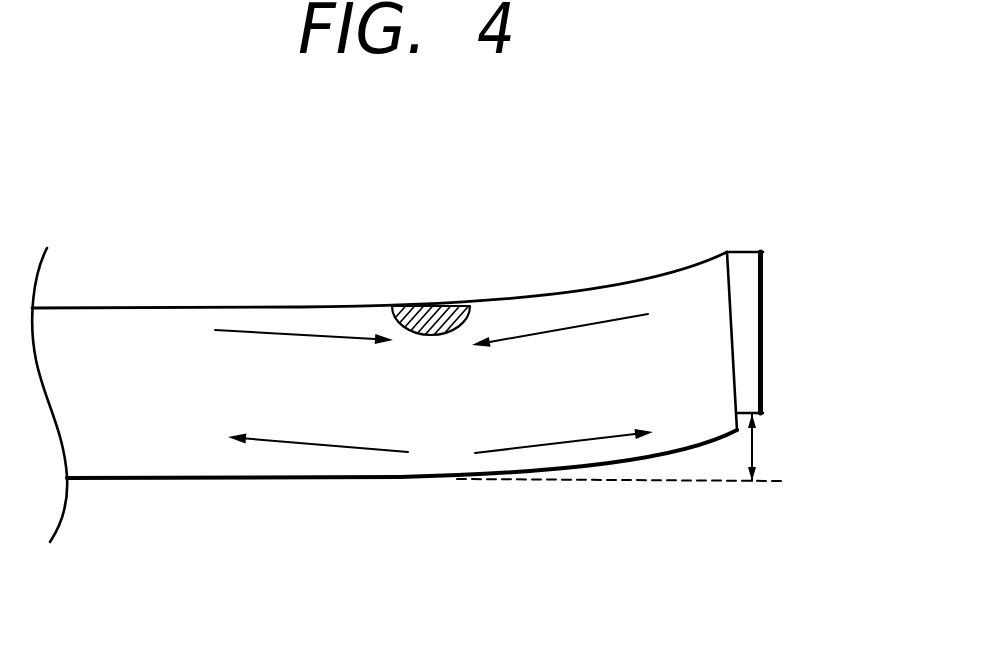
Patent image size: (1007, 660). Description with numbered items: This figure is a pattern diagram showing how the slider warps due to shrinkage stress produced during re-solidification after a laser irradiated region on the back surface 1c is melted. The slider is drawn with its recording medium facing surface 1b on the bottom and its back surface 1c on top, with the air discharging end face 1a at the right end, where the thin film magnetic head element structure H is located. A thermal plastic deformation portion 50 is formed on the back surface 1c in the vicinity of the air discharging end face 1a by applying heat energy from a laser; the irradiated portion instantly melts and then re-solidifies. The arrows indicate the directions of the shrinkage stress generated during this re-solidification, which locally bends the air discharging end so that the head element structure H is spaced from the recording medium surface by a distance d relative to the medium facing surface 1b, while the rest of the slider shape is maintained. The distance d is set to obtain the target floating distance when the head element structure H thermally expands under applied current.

The air discharging end face 1a is at (730, 284).
The recording medium facing surface 1b is at (370, 478).
The back surface 1c is at (160, 307).
The thermal plastic deformation portion 50 is at (424, 306).
The thin film magnetic head element structure H is at (747, 342).
The distance d is at (765, 447).